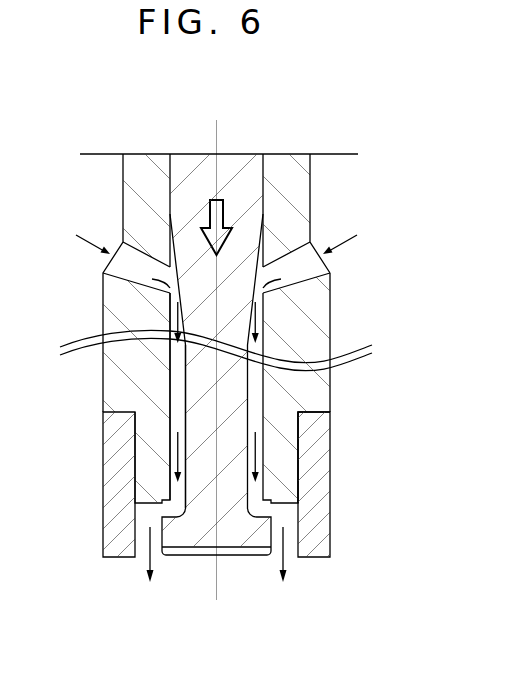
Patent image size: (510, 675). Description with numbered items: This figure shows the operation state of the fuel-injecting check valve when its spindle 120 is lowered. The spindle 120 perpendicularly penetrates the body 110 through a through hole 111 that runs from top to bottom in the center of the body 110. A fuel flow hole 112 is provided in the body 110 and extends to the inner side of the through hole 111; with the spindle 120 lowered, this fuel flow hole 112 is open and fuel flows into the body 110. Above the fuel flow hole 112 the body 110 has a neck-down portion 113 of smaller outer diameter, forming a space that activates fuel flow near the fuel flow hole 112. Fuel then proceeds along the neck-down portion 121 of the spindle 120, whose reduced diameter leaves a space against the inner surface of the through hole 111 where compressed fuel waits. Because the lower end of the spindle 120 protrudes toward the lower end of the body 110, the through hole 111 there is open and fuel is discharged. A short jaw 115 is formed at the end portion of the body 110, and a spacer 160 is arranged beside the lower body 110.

The body 110 is at (338, 316).
The through hole 111 is at (170, 383).
The fuel flow hole 112 is at (313, 263).
The neck-down portion 113 is at (313, 193).
The short jaw 115 is at (310, 413).
The spindle 120 is at (178, 360).
The neck-down portion 121 is at (186, 430).
The spacer 160 is at (338, 483).